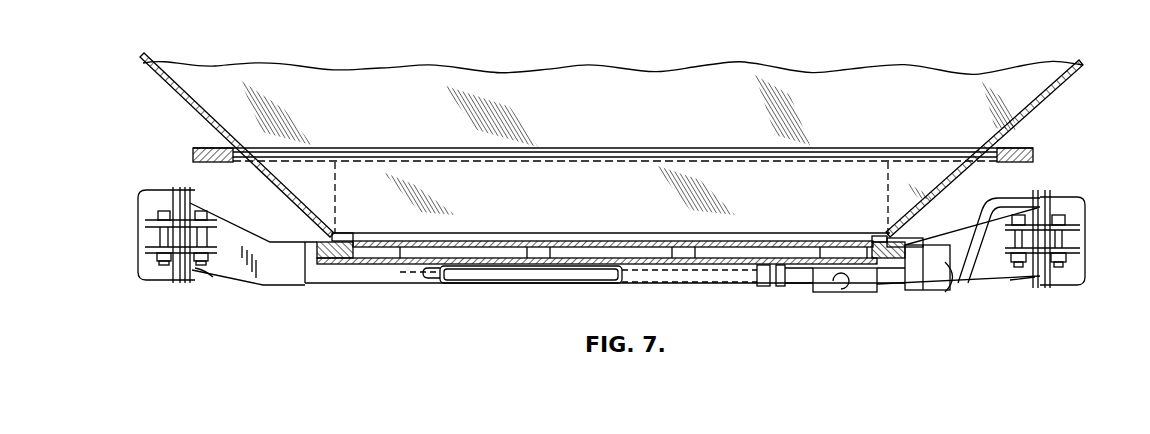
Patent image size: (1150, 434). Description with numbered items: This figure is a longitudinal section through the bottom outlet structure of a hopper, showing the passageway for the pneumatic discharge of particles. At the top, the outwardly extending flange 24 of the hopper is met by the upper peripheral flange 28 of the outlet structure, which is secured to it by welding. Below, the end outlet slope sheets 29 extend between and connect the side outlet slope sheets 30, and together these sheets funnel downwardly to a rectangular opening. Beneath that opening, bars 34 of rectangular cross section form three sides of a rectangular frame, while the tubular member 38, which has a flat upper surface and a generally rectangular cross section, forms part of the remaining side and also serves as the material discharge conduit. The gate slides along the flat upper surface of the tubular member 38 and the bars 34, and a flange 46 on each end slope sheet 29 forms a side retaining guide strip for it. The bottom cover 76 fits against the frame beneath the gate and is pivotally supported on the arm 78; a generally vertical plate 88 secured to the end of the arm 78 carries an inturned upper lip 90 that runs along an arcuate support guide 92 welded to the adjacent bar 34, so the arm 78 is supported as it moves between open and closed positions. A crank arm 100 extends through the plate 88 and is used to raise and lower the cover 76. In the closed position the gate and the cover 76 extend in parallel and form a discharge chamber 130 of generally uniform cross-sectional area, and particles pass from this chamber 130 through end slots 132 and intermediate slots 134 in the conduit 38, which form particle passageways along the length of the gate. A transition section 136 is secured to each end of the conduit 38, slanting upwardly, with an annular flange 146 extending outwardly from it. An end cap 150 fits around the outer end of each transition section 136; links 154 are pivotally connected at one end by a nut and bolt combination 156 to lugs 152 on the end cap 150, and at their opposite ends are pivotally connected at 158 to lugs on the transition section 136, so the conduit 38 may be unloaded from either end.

The outwardly extending flange 24 is at (220, 148).
The upper peripheral flange 28 is at (222, 160).
The end outlet slope sheet 29 is at (273, 183).
The side outlet slope sheet 30 is at (596, 190).
The bar 34 is at (332, 260).
The tubular member 38 is at (398, 280).
The flange 46 is at (345, 233).
The bottom cover 76 is at (760, 278).
The arm 78 is at (462, 283).
The vertical plate 88 is at (950, 290).
The inturned upper lip 90 is at (937, 247).
The arcuate support guide 92 is at (905, 245).
The crank arm 100 is at (988, 200).
The discharge chamber 130 is at (755, 250).
The end slot 132 is at (373, 243).
The intermediate slot 134 is at (538, 248).
The transition section 136 is at (278, 282).
The annular flange 146 is at (190, 196).
The end cap 150 is at (138, 278).
The lug 152 is at (1083, 227).
The link 154 is at (185, 284).
The nut and bolt combination 156 is at (1085, 263).
The pivotal connection 158 is at (213, 277).